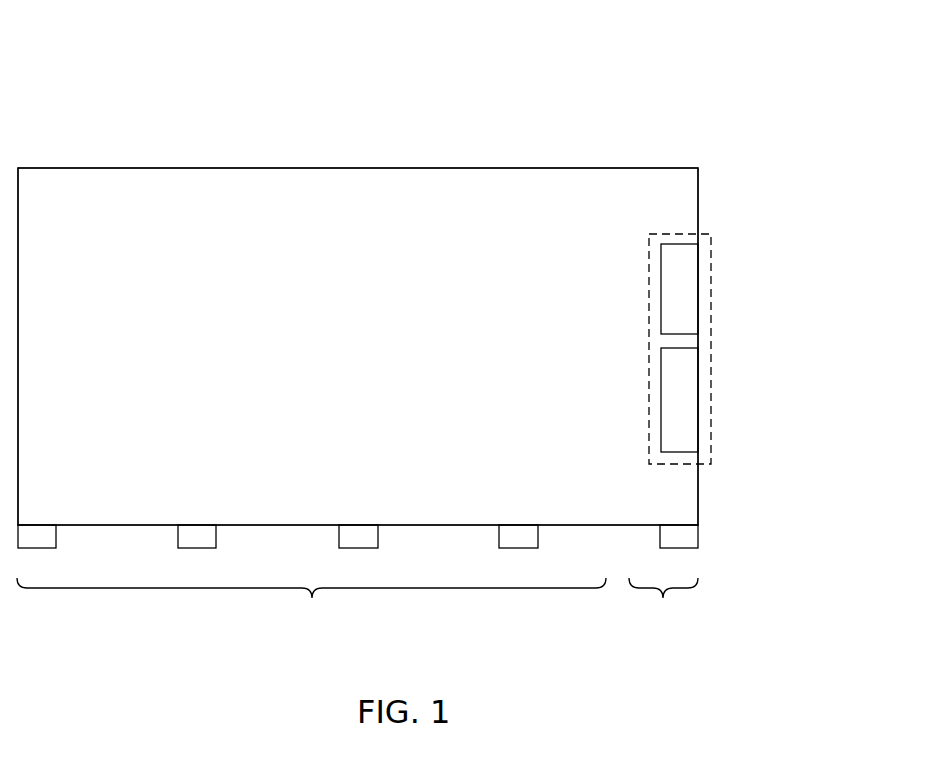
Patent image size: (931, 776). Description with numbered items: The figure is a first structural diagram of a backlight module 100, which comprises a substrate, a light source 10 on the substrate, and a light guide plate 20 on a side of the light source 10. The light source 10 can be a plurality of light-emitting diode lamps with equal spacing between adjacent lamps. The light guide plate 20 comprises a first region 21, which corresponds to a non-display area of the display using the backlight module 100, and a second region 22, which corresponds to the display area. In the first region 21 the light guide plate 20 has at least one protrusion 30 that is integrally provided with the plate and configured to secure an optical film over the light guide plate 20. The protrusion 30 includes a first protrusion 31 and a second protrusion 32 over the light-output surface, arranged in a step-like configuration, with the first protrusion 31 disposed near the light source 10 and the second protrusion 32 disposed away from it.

The backlight module 100 is at (283, 140).
The light guide plate 20 is at (699, 212).
The light source 10 is at (699, 532).
The second region 22 is at (311, 604).
The first region 21 is at (663, 603).
The protrusion 30 is at (711, 344).
The second protrusion 32 is at (678, 292).
The first protrusion 31 is at (678, 406).